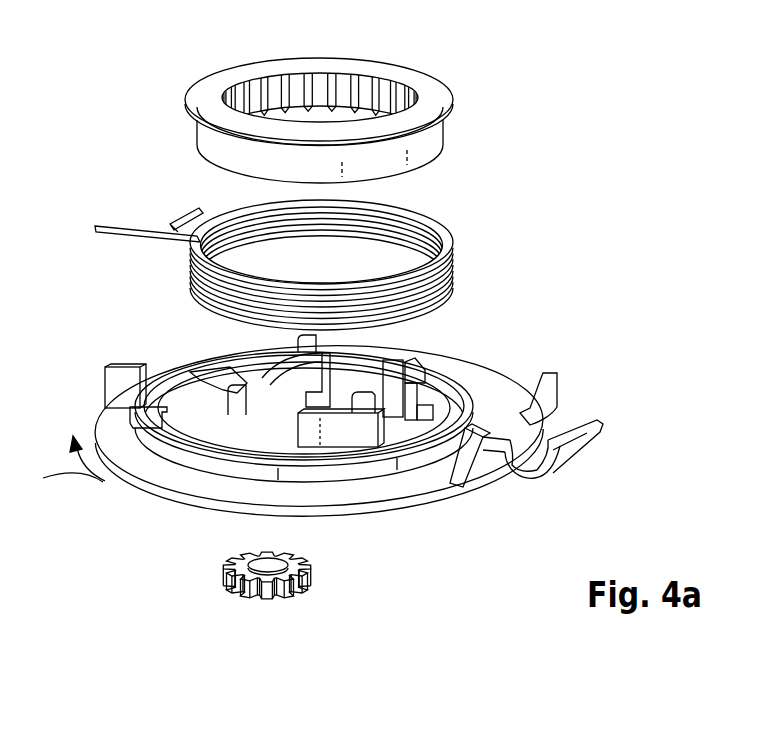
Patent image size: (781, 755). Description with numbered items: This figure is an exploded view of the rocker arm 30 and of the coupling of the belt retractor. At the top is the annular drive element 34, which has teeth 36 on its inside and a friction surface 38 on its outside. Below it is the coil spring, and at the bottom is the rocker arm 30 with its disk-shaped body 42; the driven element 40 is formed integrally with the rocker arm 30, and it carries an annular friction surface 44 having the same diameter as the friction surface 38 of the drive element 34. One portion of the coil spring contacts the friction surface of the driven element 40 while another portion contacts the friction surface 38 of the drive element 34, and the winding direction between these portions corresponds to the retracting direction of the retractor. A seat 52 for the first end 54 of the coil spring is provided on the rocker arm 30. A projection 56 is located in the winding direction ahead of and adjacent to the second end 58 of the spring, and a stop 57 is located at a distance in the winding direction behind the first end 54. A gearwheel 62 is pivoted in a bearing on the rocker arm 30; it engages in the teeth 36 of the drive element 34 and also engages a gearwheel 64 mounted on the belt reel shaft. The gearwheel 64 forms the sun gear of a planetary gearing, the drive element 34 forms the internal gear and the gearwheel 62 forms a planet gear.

The rocker arm 30 is at (432, 485).
The drive element 34 is at (420, 92).
The teeth 36 is at (347, 76).
The friction surface 38 is at (420, 153).
The driven element 40 is at (398, 437).
The disk-shaped body 42 is at (492, 405).
The annular friction surface 44 is at (437, 410).
The seat 52 is at (228, 372).
The first end 54 is at (185, 213).
The projection 56 is at (122, 365).
The stop 57 is at (250, 364).
The second end 58 is at (115, 228).
The gearwheel 62 is at (222, 578).
The gearwheel 64 is at (250, 388).